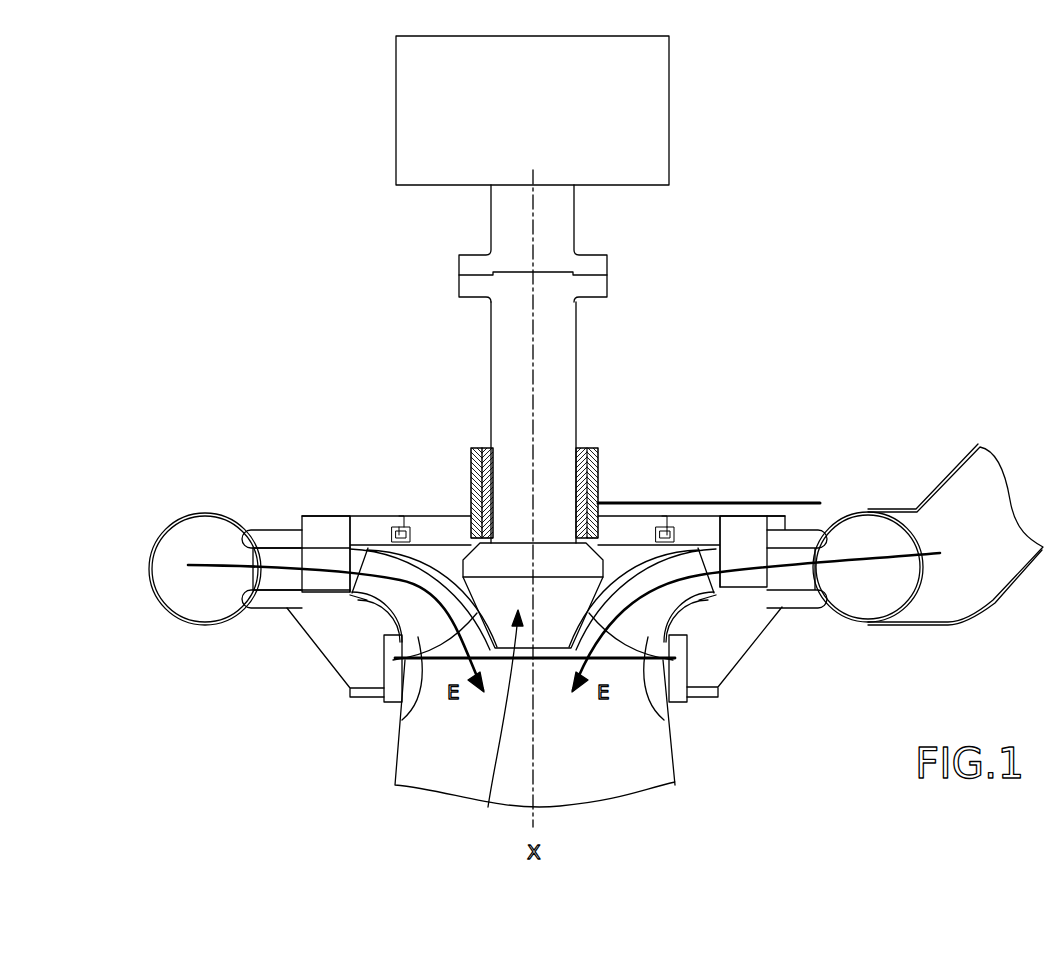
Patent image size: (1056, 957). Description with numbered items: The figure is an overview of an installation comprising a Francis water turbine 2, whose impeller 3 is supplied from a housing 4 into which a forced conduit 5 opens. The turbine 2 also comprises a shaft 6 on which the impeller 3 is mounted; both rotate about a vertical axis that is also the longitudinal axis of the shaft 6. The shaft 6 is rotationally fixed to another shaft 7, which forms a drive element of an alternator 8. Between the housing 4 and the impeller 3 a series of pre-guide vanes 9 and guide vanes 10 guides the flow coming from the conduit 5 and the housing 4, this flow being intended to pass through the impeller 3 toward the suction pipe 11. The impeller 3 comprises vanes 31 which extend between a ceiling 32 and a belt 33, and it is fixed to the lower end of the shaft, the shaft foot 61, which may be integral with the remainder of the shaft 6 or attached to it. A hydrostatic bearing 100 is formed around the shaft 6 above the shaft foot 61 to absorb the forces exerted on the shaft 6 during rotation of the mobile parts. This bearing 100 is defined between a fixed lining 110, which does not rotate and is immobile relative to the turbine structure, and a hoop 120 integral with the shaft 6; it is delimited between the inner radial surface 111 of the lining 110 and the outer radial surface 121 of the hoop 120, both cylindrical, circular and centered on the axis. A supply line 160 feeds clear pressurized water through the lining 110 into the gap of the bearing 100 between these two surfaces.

The Francis water turbine 2 is at (717, 414).
The impeller 3 is at (501, 724).
The housing 4 is at (862, 626).
The forced conduit 5 is at (995, 598).
The shaft 6 is at (557, 318).
The shaft 7 is at (556, 212).
The alternator 8 is at (532, 110).
The pre-guide vanes 9 is at (795, 600).
The guide vanes 10 is at (325, 560).
The suction pipe 11 is at (680, 757).
The vanes 31 is at (403, 718).
The ceiling 32 is at (471, 494).
The belt 33 is at (370, 597).
The shaft foot 61 is at (558, 565).
The hydrostatic bearing 100 is at (590, 448).
The fixed lining 110 is at (598, 489).
The inner radial surface 111 is at (497, 497).
The hoop 120 is at (487, 447).
The outer radial surface 121 is at (430, 585).
The supply line 160 is at (777, 502).